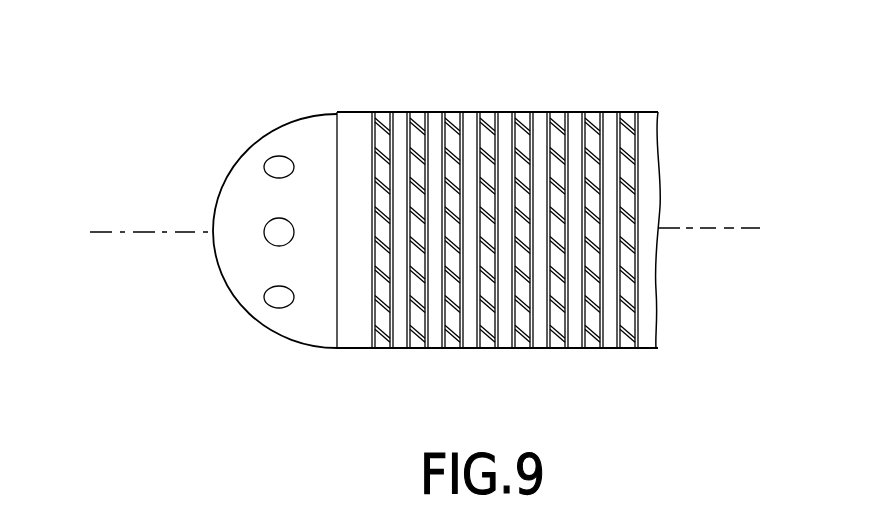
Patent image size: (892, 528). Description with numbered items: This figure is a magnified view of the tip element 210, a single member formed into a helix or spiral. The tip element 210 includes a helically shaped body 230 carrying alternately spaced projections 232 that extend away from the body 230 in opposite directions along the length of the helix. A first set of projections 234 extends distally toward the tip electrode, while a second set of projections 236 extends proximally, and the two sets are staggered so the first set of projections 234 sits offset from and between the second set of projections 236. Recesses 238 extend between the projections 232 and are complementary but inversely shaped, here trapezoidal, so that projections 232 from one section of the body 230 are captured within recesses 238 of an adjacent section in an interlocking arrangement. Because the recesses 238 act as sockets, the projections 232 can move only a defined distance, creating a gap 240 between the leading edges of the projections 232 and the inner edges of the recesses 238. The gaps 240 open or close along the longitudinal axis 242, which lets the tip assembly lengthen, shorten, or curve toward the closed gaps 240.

The tip element 210 is at (460, 111).
The helically shaped body 230 is at (501, 342).
The projections 232 is at (383, 180).
The first set of projections 234 is at (520, 170).
The second set of projections 236 is at (565, 222).
The recesses 238 is at (564, 322).
The gap 240 is at (409, 290).
The longitudinal axis 242 is at (718, 228).